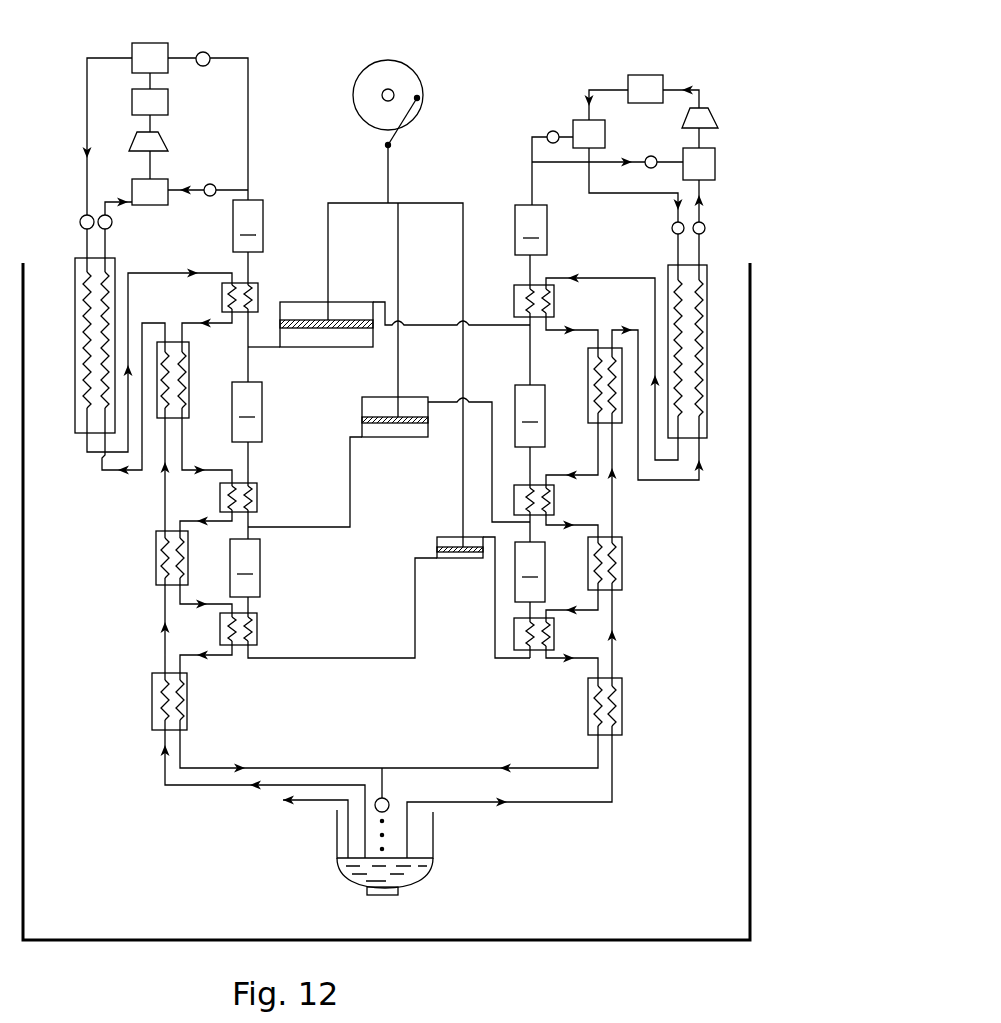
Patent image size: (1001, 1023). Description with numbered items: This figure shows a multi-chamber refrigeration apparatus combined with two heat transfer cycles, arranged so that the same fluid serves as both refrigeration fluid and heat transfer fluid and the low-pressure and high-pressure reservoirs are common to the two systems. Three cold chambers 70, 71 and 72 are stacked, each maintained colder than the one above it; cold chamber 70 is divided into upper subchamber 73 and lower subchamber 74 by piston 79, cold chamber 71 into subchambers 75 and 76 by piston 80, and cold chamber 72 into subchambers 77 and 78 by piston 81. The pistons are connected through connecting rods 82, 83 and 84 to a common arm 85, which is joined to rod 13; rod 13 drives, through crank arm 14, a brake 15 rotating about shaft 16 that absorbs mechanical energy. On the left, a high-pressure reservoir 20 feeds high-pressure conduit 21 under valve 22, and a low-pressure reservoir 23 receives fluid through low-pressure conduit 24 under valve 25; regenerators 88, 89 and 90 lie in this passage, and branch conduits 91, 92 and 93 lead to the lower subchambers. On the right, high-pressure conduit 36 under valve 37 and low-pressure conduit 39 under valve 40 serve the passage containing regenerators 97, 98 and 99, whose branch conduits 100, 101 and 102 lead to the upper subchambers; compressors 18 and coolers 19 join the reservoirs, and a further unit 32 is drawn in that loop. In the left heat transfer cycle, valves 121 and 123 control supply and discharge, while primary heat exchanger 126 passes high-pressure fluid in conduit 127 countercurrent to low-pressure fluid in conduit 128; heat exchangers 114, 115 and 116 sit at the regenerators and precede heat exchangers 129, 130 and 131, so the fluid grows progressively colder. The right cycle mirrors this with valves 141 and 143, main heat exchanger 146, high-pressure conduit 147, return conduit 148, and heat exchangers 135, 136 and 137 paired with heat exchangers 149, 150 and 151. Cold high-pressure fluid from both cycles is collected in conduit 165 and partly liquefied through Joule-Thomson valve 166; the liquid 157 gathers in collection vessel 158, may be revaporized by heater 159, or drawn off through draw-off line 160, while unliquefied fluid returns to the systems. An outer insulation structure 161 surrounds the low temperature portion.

The connecting rod 13 is at (390, 176).
The crank arm 14 is at (405, 115).
The brake 15 is at (404, 63).
The shaft 16 is at (395, 95).
The compressor 18 is at (158, 145).
The cooler 19 is at (160, 102).
The high-pressure reservoir 20 is at (160, 46).
The high-pressure conduit 21 is at (248, 112).
The valve 22 is at (206, 52).
The low-pressure reservoir 23 is at (132, 184).
The low-pressure conduit 24 is at (246, 186).
The valve 25 is at (208, 196).
The heat exchanger 32 is at (641, 80).
The high-pressure conduit 36 is at (531, 157).
The valve 37 is at (549, 133).
The low-pressure conduit 39 is at (596, 170).
The valve 40 is at (654, 156).
The cold chamber 70 is at (326, 324).
The cold chamber 71 is at (378, 418).
The cold chamber 72 is at (443, 549).
The upper subchamber 73 is at (294, 314).
The lower subchamber 74 is at (362, 338).
The upper subchamber 75 is at (362, 403).
The lower subchamber 76 is at (400, 432).
The upper subchamber 77 is at (437, 540).
The lower subchamber 78 is at (452, 562).
The piston 79 is at (335, 332).
The piston 80 is at (407, 418).
The piston 81 is at (476, 563).
The connecting rod 82 is at (330, 254).
The connecting rod 83 is at (400, 254).
The connecting rod 84 is at (466, 254).
The common arm 85 is at (420, 204).
The regenerator 88 is at (248, 226).
The regenerator 89 is at (247, 412).
The regenerator 90 is at (245, 568).
The branch conduit 91 is at (256, 350).
The branch conduit 92 is at (344, 530).
The branch conduit 93 is at (345, 659).
The regenerator 97 is at (531, 230).
The regenerator 98 is at (530, 416).
The regenerator 99 is at (530, 572).
The branch conduit 100 is at (441, 338).
The branch conduit 101 is at (493, 467).
The branch conduit 102 is at (493, 623).
The heat exchanger 114 is at (255, 290).
The heat exchanger 115 is at (257, 500).
The heat exchanger 116 is at (257, 635).
The valve 121 is at (81, 218).
The valve 123 is at (108, 229).
The primary heat exchanger 126 is at (115, 272).
The high-pressure conduit 127 is at (174, 264).
The low-pressure return conduit 128 is at (110, 474).
The heat exchanger 129 is at (189, 352).
The heat exchanger 130 is at (156, 540).
The heat exchanger 131 is at (152, 678).
The heat exchanger 135 is at (522, 292).
The heat exchanger 136 is at (549, 507).
The heat exchanger 137 is at (549, 642).
The high-pressure valve 141 is at (672, 228).
The valve 143 is at (705, 228).
The main heat exchanger 146 is at (707, 312).
The high-pressure conduit 147 is at (640, 277).
The low-pressure return conduit 148 is at (650, 486).
The heat exchanger 149 is at (588, 384).
The heat exchanger 150 is at (622, 568).
The heat exchanger 151 is at (622, 706).
The liquid 157 is at (425, 868).
The liquid collection vessel 158 is at (434, 858).
The heater 159 is at (396, 893).
The draw-off line 160 is at (302, 806).
The outer insulation structure 161 is at (748, 728).
The conduit 165 is at (384, 787).
The Joule-Thomson valve 166 is at (392, 806).